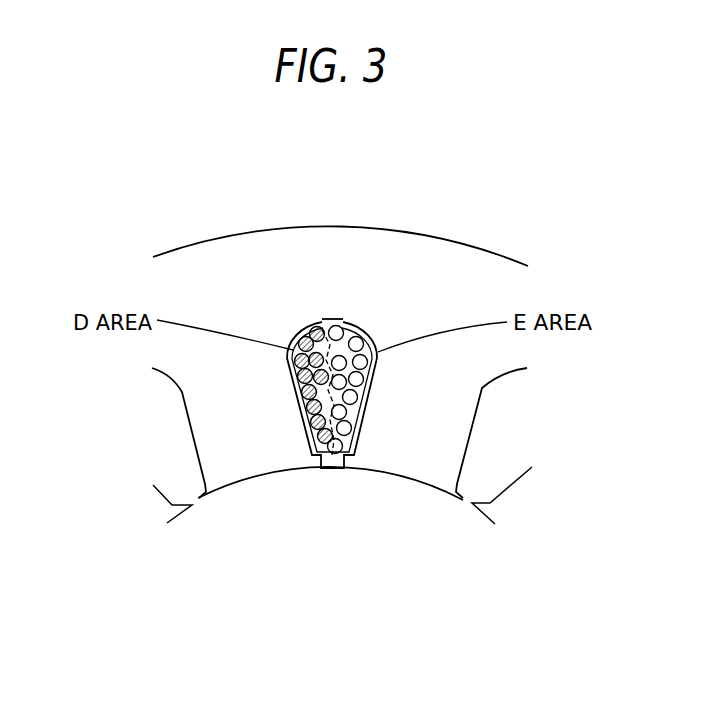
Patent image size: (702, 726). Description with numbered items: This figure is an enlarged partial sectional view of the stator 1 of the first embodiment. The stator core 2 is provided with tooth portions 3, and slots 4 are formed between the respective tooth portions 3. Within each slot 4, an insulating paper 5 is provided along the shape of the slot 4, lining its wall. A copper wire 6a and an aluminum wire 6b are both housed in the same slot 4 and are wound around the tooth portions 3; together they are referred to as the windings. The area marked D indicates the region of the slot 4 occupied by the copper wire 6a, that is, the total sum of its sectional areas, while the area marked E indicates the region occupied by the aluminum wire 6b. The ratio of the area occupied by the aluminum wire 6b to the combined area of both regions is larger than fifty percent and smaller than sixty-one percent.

The stator 1 is at (199, 235).
The stator core 2 is at (440, 273).
The tooth portions 3 is at (255, 445).
The slots 4 is at (343, 320).
The insulating paper 5 is at (322, 320).
The copper wire 6a is at (318, 456).
The aluminum wire 6b is at (335, 446).